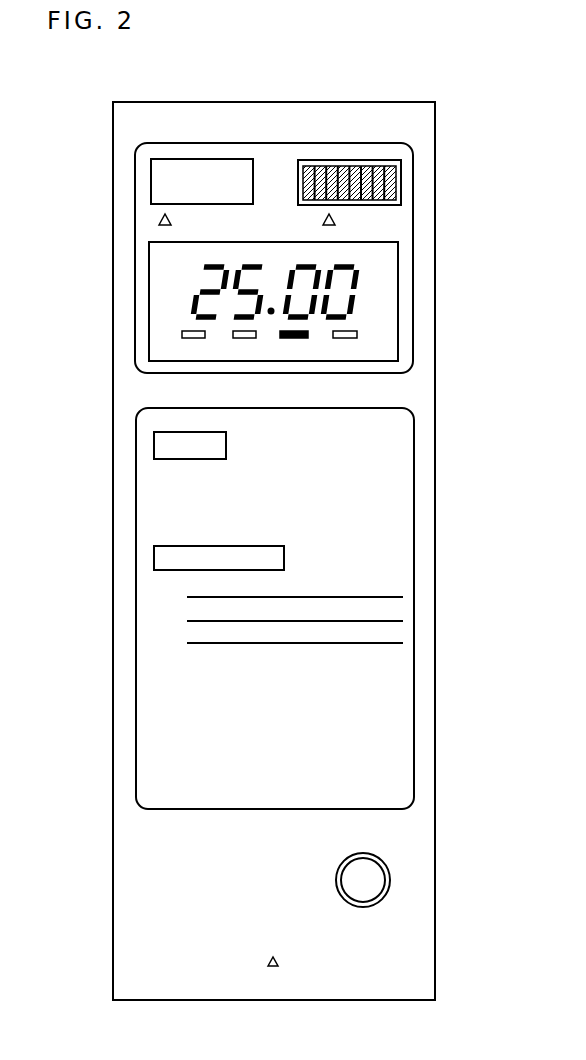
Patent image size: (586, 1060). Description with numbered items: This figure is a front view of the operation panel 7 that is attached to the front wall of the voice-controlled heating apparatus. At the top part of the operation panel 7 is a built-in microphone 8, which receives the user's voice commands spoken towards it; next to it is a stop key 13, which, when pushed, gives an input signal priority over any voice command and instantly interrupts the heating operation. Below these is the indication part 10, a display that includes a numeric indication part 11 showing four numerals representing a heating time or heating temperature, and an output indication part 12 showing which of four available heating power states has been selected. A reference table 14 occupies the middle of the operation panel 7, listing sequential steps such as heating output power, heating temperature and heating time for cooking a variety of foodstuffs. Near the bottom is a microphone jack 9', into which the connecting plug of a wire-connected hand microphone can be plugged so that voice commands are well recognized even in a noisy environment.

The operation panel 7 is at (130, 955).
The built-in microphone 8 is at (407, 170).
The microphone jack 9' is at (412, 874).
The indication part 10 is at (400, 275).
The numeric indication part 11 is at (165, 287).
The output indication part 12 is at (165, 340).
The stop key 13 is at (160, 187).
The reference table 14 is at (400, 452).